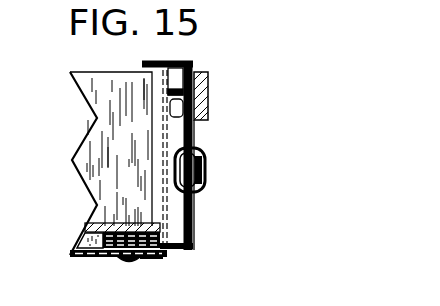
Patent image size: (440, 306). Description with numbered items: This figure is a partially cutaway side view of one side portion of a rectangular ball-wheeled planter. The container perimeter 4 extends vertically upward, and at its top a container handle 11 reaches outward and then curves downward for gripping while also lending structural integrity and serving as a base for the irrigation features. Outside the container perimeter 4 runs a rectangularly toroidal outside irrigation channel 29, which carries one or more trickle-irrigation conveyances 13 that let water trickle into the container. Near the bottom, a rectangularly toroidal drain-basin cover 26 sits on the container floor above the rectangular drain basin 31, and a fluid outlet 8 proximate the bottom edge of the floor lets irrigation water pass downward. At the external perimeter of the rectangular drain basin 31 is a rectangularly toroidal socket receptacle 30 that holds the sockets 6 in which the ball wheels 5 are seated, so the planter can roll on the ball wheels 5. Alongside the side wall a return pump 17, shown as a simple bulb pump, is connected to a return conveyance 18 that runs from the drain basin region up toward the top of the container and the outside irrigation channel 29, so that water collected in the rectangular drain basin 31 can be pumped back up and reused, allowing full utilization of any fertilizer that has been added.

The trickle-irrigation conveyance 13 is at (186, 72).
The return conveyance 18 is at (183, 63).
The rectangularly toroidal outside irrigation channel 29 is at (193, 73).
The container handle 11 is at (208, 103).
The container perimeter 4 is at (195, 122).
The return pump 17 is at (207, 160).
The rectangularly toroidal drain-basin cover 26 is at (138, 223).
The rectangularly toroidal socket receptacle 30 is at (107, 243).
The rectangular drain basin 31 is at (84, 233).
The fluid outlet 8 is at (80, 256).
The ball wheel 5 is at (126, 260).
The socket 6 is at (147, 260).